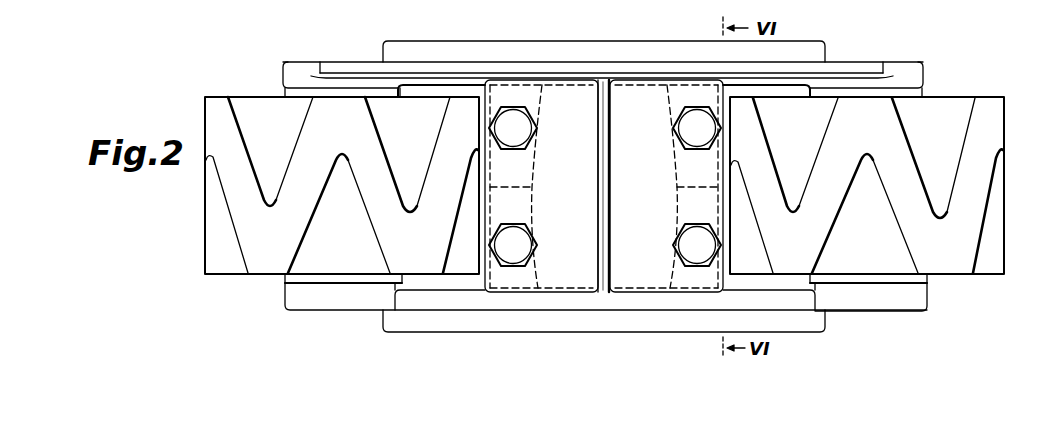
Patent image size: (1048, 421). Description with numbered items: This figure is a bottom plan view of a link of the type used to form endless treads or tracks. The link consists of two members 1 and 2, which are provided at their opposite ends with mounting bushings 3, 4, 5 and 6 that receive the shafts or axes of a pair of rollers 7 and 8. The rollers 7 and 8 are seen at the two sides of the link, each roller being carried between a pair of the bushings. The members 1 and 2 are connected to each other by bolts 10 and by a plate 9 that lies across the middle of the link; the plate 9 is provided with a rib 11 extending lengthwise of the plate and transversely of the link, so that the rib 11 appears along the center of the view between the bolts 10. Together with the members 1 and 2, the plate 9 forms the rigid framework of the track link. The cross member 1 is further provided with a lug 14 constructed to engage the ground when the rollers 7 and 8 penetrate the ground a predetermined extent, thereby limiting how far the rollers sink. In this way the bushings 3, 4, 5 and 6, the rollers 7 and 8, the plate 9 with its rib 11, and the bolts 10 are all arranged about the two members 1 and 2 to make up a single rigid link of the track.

The cross member 1 is at (462, 40).
The member 2 is at (427, 332).
The mounting bushing 3 is at (295, 74).
The mounting bushing 4 is at (908, 79).
The mounting bushing 5 is at (303, 297).
The mounting bushing 6 is at (897, 292).
The roller 7 is at (218, 246).
The roller 8 is at (987, 128).
The plate 9 is at (572, 233).
The bolt 10 is at (513, 128).
The rib 11 is at (603, 192).
The lug 14 is at (532, 68).